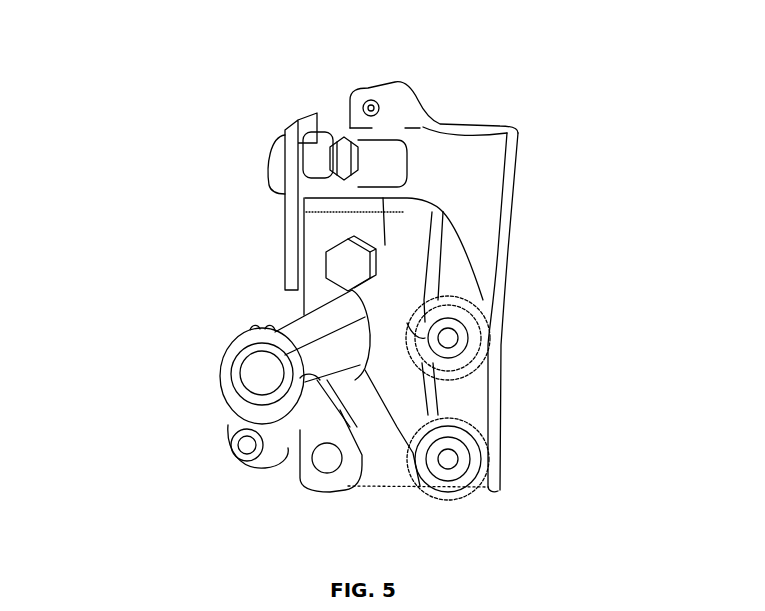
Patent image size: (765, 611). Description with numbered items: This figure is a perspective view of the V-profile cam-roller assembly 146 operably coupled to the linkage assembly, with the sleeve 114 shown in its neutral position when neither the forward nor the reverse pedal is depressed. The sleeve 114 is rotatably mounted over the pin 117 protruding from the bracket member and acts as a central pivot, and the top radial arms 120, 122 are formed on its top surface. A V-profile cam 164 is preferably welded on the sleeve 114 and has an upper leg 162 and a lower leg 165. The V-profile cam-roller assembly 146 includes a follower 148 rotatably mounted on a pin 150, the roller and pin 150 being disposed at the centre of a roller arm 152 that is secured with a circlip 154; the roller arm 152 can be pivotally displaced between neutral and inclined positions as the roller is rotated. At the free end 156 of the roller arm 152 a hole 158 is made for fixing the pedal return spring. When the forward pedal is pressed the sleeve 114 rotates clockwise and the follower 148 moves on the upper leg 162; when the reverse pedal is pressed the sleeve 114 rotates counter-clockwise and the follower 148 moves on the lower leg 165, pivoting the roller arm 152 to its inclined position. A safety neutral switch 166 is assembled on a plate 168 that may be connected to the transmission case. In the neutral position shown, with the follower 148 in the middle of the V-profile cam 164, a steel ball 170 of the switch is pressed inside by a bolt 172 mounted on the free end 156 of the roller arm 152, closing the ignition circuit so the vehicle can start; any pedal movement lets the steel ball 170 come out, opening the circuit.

The V-profile cam-roller assembly 146 is at (213, 253).
The sleeve 114 is at (312, 322).
The pin 117 is at (253, 383).
The top radial arm 120 is at (298, 425).
The top radial arm 122 is at (258, 450).
The follower 148 is at (489, 323).
The pin 150 is at (447, 338).
The roller arm 152 is at (484, 216).
The circlip 154 is at (453, 363).
The free end 156 is at (418, 105).
The hole 158 is at (365, 99).
The upper leg 162 is at (400, 273).
The V-profile cam 164 is at (406, 248).
The lower leg 165 is at (405, 395).
The safety neutral switch 166 is at (340, 135).
The plate 168 is at (290, 200).
The steel ball 170 is at (325, 147).
The bolt 172 is at (383, 153).